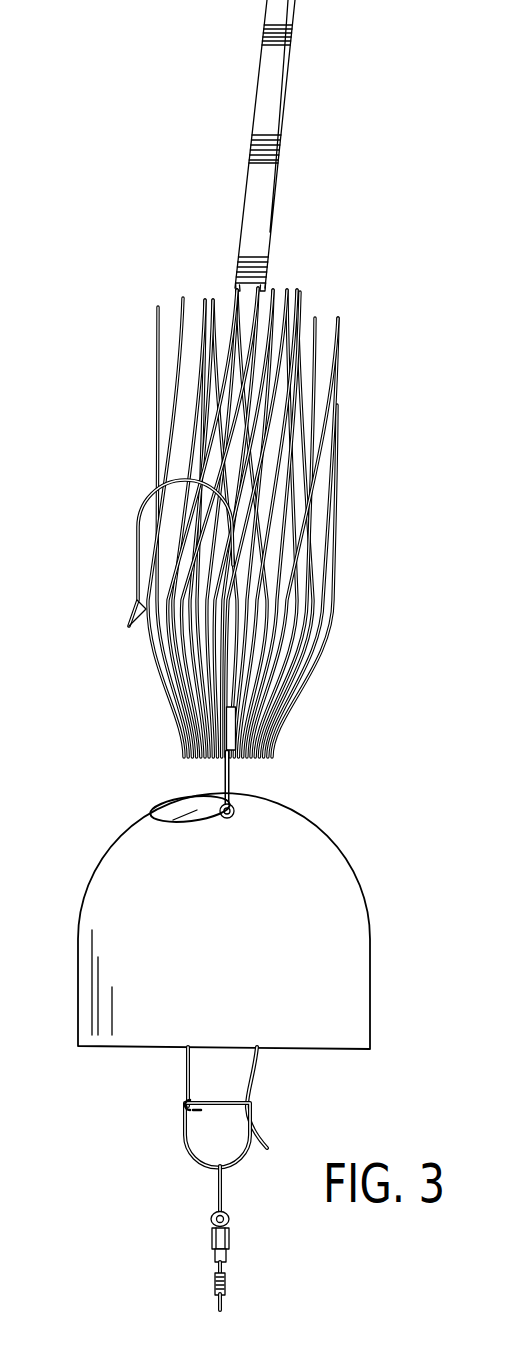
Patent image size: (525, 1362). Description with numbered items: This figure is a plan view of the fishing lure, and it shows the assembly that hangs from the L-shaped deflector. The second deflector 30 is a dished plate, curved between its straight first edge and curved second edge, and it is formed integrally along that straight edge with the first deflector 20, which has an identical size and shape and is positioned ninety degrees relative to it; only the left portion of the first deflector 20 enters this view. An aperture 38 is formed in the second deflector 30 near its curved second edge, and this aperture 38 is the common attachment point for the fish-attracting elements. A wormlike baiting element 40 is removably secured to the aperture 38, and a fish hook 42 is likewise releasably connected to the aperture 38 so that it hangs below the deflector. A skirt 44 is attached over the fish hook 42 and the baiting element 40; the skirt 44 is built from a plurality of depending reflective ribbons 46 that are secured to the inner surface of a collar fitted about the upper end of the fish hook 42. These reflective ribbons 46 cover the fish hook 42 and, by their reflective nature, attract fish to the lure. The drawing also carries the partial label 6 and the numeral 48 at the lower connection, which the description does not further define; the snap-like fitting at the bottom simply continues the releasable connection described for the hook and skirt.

The baiting element 40 is at (252, 147).
The reflective ribbons 46 is at (160, 339).
The skirt 44 is at (150, 414).
The fish hook 42 is at (134, 602).
The aperture 38 is at (150, 815).
The second deflector 30 is at (213, 938).
The lure 6 is at (8, 990).
The first deflector 20 is at (17, 1092).
The snap swivel 48 is at (208, 1246).